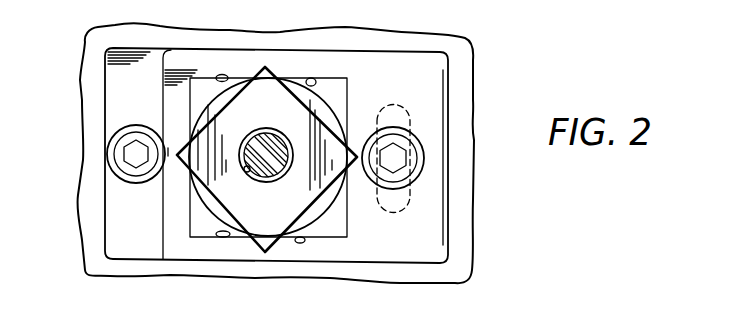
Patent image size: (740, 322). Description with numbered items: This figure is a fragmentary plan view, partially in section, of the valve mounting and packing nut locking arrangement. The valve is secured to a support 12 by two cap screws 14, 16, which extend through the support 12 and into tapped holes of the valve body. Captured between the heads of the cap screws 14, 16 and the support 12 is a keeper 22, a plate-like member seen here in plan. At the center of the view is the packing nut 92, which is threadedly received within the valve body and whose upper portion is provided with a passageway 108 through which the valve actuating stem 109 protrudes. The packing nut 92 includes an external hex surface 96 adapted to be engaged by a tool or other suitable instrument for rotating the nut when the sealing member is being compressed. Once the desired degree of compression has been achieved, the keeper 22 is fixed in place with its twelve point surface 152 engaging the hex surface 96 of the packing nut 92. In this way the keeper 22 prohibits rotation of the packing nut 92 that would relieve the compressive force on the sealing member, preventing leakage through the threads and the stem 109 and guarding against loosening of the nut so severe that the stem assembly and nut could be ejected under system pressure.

The support 12 is at (100, 79).
The cap screw 14 is at (152, 173).
The cap screw 16 is at (410, 147).
The keeper 22 is at (440, 150).
The packing nut 92 is at (222, 220).
The external hex surface 96 is at (312, 230).
The passageway 108 is at (246, 170).
The valve actuating stem 109 is at (298, 113).
The twelve point surface 152 is at (250, 74).